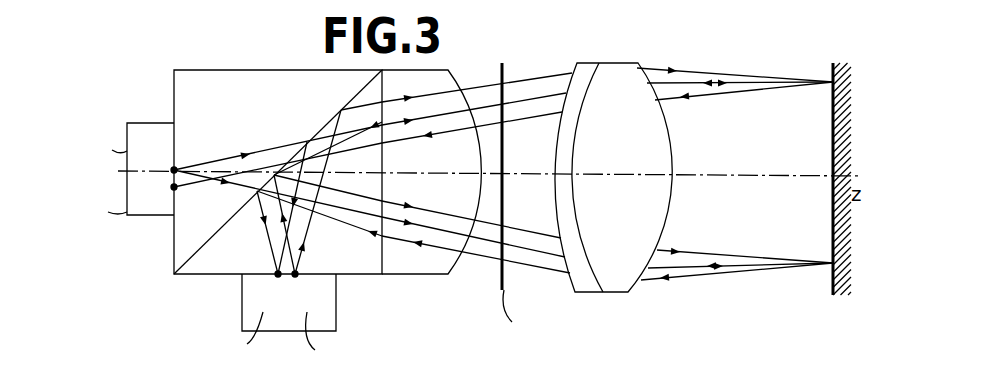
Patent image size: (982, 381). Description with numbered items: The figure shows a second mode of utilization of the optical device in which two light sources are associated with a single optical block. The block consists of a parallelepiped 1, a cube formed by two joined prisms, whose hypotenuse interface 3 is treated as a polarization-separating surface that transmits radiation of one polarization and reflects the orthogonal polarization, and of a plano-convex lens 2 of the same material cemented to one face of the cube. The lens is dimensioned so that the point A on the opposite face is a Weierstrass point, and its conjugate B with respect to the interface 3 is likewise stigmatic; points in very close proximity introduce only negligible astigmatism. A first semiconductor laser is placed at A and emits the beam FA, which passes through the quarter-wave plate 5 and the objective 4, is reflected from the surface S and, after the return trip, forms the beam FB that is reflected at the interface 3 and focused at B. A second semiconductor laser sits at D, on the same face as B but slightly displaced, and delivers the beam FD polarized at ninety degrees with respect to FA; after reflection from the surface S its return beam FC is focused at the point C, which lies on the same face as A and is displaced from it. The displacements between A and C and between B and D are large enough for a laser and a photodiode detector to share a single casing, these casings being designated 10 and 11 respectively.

The parallelepiped 1 is at (215, 266).
The plano-convex lens 2 is at (433, 268).
The interface 3 is at (187, 259).
The objective 4 is at (614, 279).
The quarter-wave plate 5 is at (504, 283).
The casing 10 is at (133, 124).
The casing 11 is at (336, 320).
The point A is at (172, 168).
The point B is at (278, 277).
The point C is at (171, 187).
The point D is at (294, 277).
The surface S is at (830, 281).
The beam FA is at (229, 160).
The beam FB is at (268, 235).
The beam FC is at (215, 187).
The beam FD is at (308, 228).